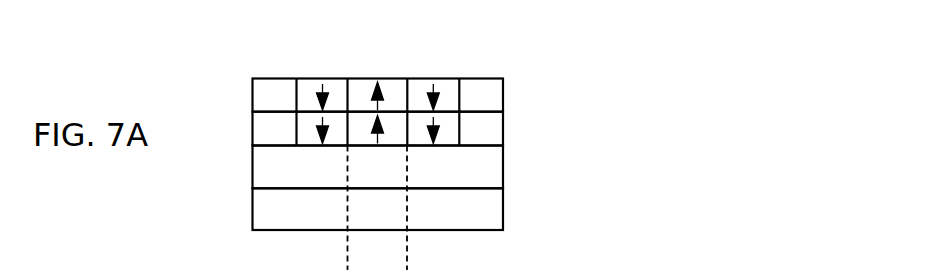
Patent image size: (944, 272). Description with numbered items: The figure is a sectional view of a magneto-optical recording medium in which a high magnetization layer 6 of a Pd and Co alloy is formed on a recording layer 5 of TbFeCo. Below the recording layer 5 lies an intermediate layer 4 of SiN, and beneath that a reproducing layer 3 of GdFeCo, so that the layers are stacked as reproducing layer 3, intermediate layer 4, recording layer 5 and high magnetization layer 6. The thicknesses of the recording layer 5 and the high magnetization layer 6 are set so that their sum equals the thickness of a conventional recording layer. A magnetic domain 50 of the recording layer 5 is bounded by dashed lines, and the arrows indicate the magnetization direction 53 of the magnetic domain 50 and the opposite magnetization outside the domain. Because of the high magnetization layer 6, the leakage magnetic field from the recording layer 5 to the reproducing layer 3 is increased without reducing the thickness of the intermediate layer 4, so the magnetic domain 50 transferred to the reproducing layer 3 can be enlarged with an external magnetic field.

The reproducing layer 3 is at (497, 214).
The intermediate layer 4 is at (497, 167).
The recording layer 5 is at (497, 131).
The high magnetization layer 6 is at (497, 93).
The magnetic domain 50 is at (390, 118).
The magnetization direction 53 is at (371, 121).